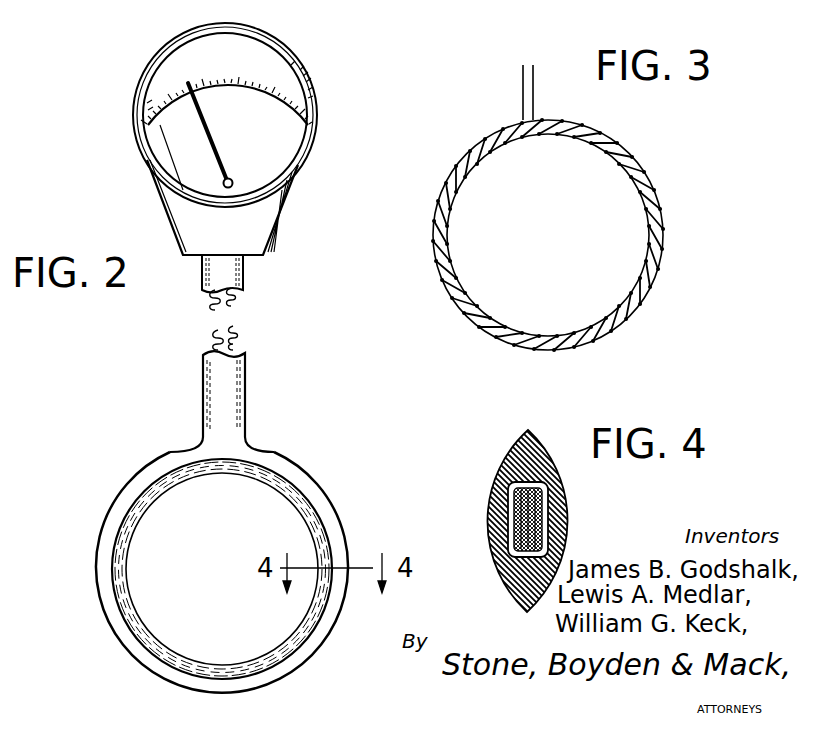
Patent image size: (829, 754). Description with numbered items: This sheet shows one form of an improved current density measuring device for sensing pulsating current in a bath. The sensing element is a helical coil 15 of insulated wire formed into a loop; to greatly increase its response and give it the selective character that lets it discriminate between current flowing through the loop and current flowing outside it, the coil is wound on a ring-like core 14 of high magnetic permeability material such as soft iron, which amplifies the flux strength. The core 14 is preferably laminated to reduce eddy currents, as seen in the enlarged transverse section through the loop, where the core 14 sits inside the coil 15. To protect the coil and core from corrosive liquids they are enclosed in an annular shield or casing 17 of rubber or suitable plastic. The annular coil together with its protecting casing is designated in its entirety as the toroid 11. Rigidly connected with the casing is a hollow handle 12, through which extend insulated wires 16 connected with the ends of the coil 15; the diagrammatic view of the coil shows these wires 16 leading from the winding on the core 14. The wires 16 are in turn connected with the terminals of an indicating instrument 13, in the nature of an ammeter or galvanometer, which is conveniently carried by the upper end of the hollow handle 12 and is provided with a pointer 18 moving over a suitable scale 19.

In FIG. 2, the toroid 11 is at (230, 547).
In FIG. 2, the hollow handle 12 is at (241, 388).
In FIG. 2, the indicating instrument 13 is at (313, 127).
In FIG. 3, the ring-like core 14 is at (614, 149).
In FIG. 4, the ring-like core 14 is at (545, 515).
In FIG. 3, the helical coil 15 is at (437, 227).
In FIG. 4, the helical coil 15 is at (501, 488).
In FIG. 2, the insulated wires 16 is at (216, 340).
In FIG. 3, the insulated wires 16 is at (522, 83).
In FIG. 2, the annular shield or casing 17 is at (120, 518).
In FIG. 4, the annular shield or casing 17 is at (508, 455).
In FIG. 2, the pointer 18 is at (206, 137).
In FIG. 2, the scale 19 is at (235, 87).